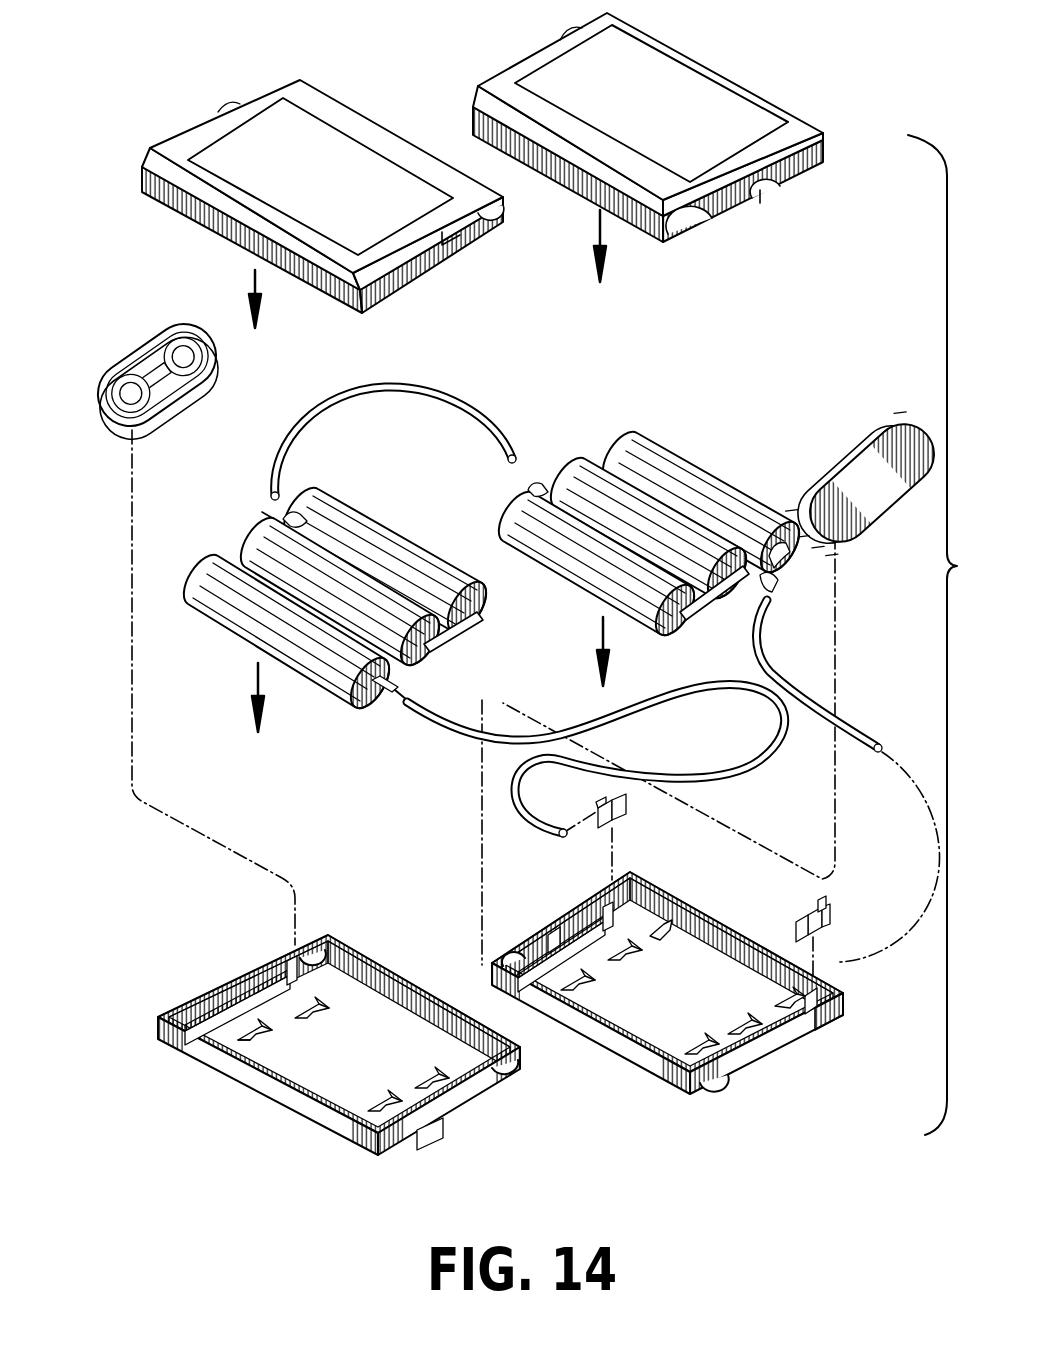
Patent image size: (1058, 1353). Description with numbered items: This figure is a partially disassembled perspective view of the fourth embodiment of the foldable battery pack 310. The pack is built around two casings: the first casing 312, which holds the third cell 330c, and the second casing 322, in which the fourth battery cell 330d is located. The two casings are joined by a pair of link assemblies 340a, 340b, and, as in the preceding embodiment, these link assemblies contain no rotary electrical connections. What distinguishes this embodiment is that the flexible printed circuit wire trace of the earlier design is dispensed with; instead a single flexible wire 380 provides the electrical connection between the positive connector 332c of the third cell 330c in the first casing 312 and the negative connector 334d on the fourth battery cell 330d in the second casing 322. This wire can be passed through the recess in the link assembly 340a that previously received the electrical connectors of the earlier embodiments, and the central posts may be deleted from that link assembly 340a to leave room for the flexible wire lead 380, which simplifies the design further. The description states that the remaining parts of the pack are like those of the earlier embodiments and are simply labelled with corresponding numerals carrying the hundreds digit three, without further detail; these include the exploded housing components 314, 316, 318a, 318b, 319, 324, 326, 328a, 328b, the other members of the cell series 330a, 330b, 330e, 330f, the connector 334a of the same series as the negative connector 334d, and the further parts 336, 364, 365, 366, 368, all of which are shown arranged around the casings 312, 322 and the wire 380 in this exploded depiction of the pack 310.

The foldable battery pack 310 is at (912, 631).
The first casing 312 is at (842, 1010).
The cover 314 is at (720, 73).
The tray 316 is at (747, 1070).
The notch 318a is at (517, 960).
The notch 318b is at (707, 1077).
The contact 319 is at (280, 1033).
The second casing 322 is at (257, 1090).
The cover 324 is at (213, 123).
The tab 326 is at (403, 1150).
The notch 328a is at (293, 962).
The notch 328b is at (513, 1077).
The battery cell 330a is at (733, 503).
The battery cell 330b is at (650, 510).
The third cell 330c is at (563, 557).
The fourth battery cell 330d is at (352, 538).
The battery cell 330e is at (360, 600).
The battery cell 330f is at (243, 613).
The positive connector 332c is at (537, 483).
The terminal tab 334a is at (775, 583).
The negative connector 334d is at (253, 511).
The connecting strip 336 is at (717, 597).
The link assembly 340a is at (143, 335).
The link assembly 340b is at (882, 513).
The wire 364 is at (747, 770).
The wire 365 is at (802, 680).
The connector 366 is at (828, 925).
The connector 368 is at (627, 817).
The flexible wire 380 is at (457, 407).